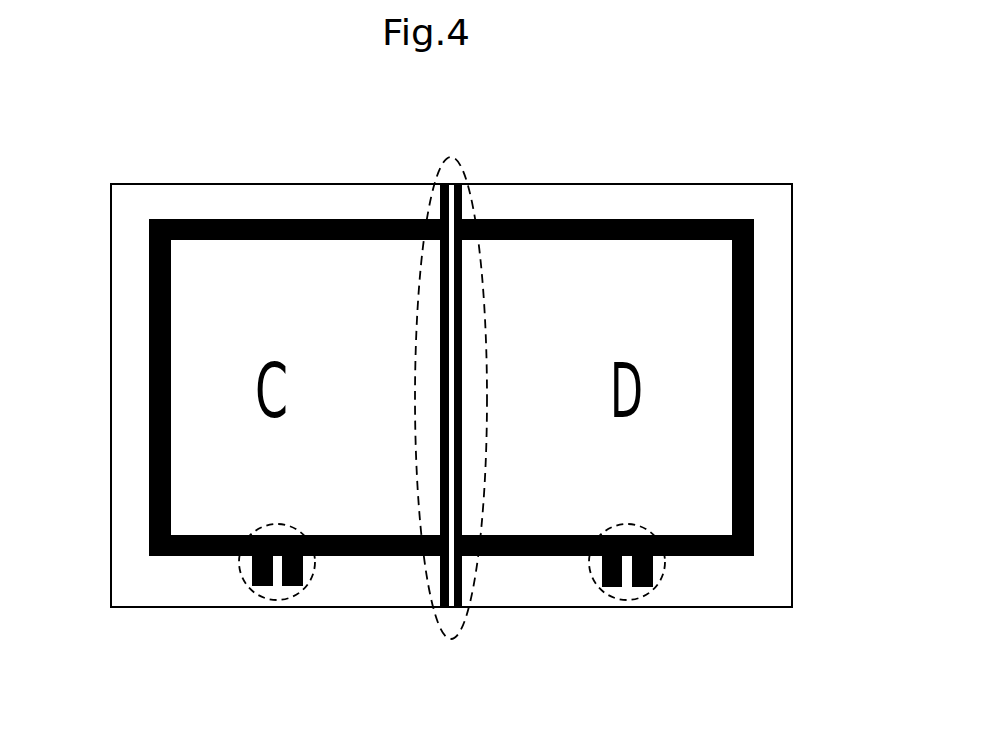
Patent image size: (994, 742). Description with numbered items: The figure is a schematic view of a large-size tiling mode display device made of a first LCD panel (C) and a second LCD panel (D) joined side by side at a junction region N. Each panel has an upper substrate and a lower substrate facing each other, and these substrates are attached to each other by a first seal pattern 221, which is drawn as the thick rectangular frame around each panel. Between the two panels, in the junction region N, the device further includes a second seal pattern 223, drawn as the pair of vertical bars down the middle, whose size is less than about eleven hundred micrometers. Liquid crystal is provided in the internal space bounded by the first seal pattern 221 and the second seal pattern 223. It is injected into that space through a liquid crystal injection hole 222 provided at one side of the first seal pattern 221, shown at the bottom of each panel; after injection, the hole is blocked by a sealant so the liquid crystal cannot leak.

The first seal pattern 221 is at (150, 443).
The liquid crystal injection hole 222 is at (310, 583).
The second seal pattern 223 is at (462, 259).
The junction region N is at (465, 177).